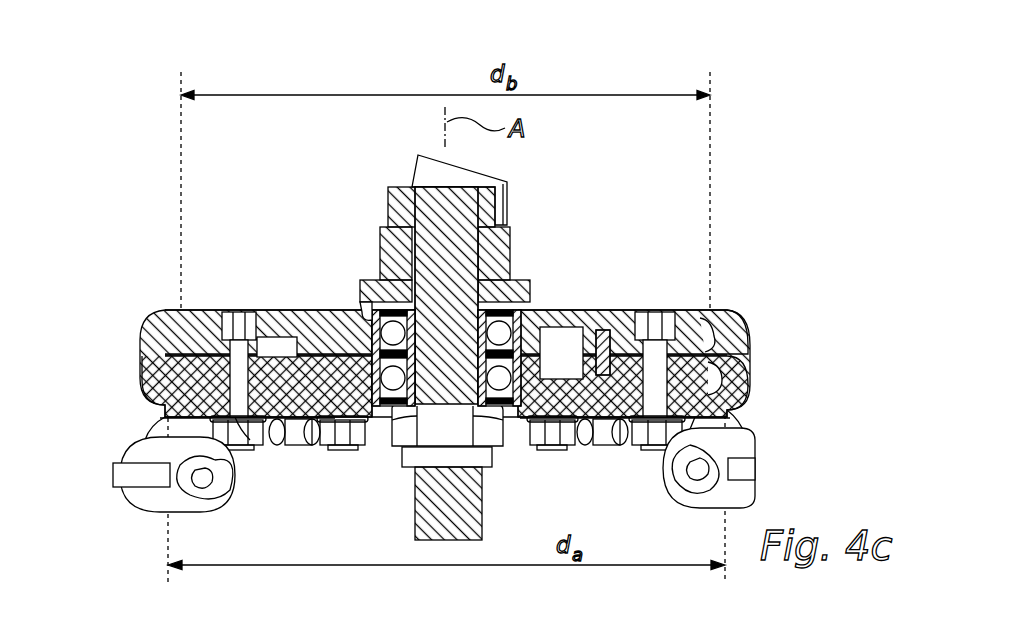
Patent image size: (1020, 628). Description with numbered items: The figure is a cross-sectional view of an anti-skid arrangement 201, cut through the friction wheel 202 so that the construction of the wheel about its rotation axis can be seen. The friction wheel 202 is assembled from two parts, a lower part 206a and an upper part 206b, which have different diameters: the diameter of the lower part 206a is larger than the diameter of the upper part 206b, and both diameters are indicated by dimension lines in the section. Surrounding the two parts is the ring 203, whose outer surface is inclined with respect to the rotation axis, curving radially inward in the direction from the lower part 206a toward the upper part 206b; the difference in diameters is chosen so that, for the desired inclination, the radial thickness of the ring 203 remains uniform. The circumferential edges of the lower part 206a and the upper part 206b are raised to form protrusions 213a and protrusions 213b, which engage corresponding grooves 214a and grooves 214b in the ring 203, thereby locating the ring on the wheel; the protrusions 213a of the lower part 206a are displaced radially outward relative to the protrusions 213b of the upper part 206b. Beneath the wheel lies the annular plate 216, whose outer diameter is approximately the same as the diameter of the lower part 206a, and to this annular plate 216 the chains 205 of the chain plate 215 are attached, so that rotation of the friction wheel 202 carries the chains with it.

The anti-skid arrangement 201 is at (146, 212).
The friction wheel 202 is at (618, 297).
The ring 203 is at (128, 355).
The chains 205 is at (138, 495).
The lower part 206a is at (312, 318).
The upper part 206b is at (326, 312).
The protrusions 213a is at (748, 365).
The protrusions 213b is at (735, 318).
The grooves 214a is at (145, 400).
The grooves 214b is at (162, 311).
The chain plate 215 is at (291, 465).
The annular plate 216 is at (712, 415).